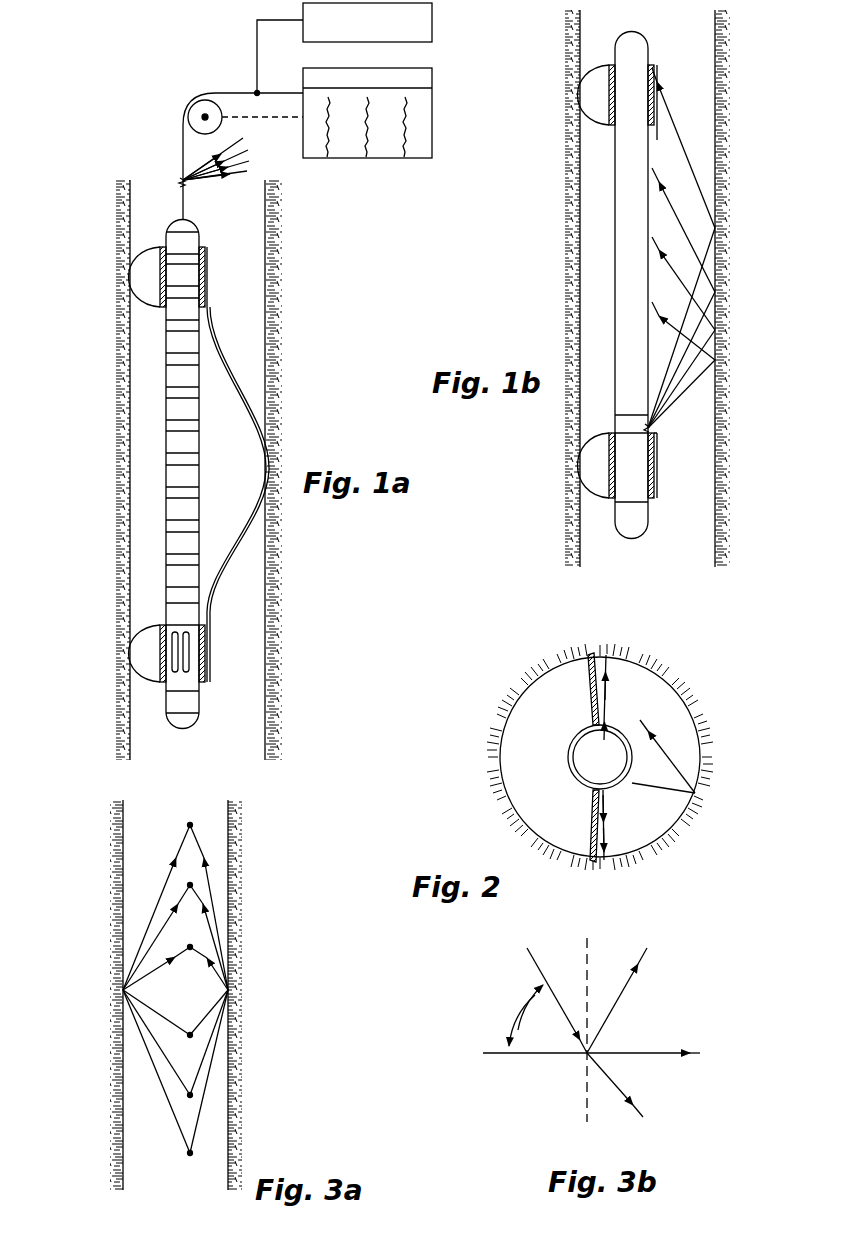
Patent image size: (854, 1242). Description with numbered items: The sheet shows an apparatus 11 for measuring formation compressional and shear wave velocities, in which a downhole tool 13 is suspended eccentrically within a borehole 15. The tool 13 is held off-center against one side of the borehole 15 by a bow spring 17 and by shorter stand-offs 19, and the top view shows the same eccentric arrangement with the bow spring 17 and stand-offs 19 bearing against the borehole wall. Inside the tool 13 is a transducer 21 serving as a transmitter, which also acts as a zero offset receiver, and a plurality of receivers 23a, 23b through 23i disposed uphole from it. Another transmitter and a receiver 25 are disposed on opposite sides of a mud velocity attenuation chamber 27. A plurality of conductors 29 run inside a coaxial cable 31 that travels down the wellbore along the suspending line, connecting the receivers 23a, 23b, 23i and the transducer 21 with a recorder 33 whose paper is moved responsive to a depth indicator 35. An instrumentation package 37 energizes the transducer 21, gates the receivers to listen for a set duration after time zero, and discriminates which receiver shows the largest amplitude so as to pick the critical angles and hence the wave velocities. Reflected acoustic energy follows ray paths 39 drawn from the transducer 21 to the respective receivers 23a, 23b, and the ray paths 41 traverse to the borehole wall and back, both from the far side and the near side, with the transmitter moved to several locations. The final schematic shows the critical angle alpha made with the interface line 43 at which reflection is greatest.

In FIG. 1A, the apparatus 11 is at (147, 456).
In FIG. 1B, the apparatus 11 is at (661, 288).
In FIG. 2, the apparatus 11 is at (604, 745).
In FIG. 1A, the downhole tool 13 is at (165, 440).
In FIG. 1B, the downhole tool 13 is at (615, 293).
In FIG. 2, the downhole tool 13 is at (578, 800).
In FIG. 1A, the borehole 15 is at (136, 574).
In FIG. 1B, the borehole 15 is at (588, 146).
In FIG. 2, the borehole 15 is at (504, 740).
In FIG. 1A, the bow spring 17 is at (234, 368).
In FIG. 2, the bow spring 17 is at (586, 680).
In FIG. 1A, the stand-offs 19 is at (143, 284).
In FIG. 2, the stand-offs 19 is at (640, 848).
In FIG. 1A, the transducer 21 is at (191, 614).
In FIG. 1B, the transducer 21 is at (656, 440).
In FIG. 1A, the receiver 23i is at (197, 242).
In FIG. 1A, the receiver 23b is at (191, 545).
In FIG. 1B, the receiver 23b is at (650, 222).
In FIG. 1A, the receiver 23a is at (191, 580).
In FIG. 1B, the receiver 23a is at (652, 290).
In FIG. 1A, the receiver 25 is at (191, 702).
In FIG. 1A, the mud velocity attenuation chamber 27 is at (186, 661).
In FIG. 1A, the conductors 29 is at (249, 160).
In FIG. 1A, the coaxial cable 31 is at (183, 145).
In FIG. 1A, the recorder 33 is at (432, 75).
In FIG. 1A, the depth indicator 35 is at (205, 117).
In FIG. 1A, the instrumentation package 37 is at (432, 28).
In FIG. 1B, the ray paths 39 is at (693, 176).
In FIG. 1B, the ray paths 41 is at (680, 388).
In FIG. 3A, the ray paths 41 is at (152, 926).
In FIG. 3B, the interface line 43 is at (628, 1053).